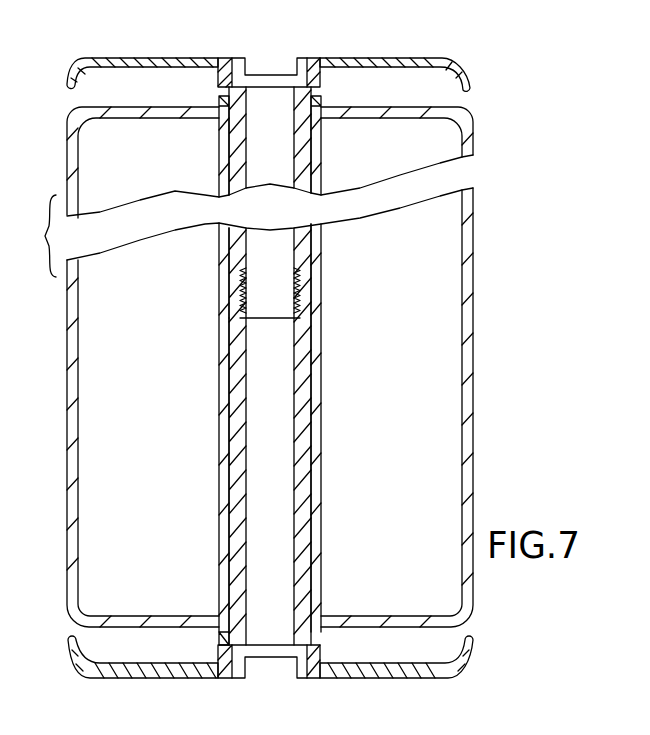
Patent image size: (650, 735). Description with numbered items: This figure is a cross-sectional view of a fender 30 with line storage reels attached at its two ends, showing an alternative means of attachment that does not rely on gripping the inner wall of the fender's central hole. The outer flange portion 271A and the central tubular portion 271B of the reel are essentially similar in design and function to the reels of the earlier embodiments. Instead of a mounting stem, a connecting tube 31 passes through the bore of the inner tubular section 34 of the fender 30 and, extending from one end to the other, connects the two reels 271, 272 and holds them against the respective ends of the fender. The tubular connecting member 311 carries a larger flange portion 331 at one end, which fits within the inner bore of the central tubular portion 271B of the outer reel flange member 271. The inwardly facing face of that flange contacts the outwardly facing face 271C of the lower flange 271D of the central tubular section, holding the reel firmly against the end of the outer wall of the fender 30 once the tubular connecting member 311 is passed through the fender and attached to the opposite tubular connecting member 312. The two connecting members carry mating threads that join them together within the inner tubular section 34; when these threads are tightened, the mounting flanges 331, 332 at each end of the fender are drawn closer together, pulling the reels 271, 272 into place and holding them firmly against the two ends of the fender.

The fender 30 is at (470, 215).
The outer flange portion 271A is at (86, 60).
The outer reel flange member 271 is at (421, 58).
The central tubular portion 271B is at (223, 60).
The outwardly facing face 271C is at (219, 102).
The lower flange 271D is at (323, 108).
The flange portion 331 is at (311, 98).
The mounting flange 332 is at (224, 645).
The connecting tube 31 is at (313, 349).
The tubular connecting member 311 is at (220, 243).
The opposite tubular connecting member 312 is at (221, 360).
The inner tubular section 34 is at (322, 263).
The reel 272 is at (447, 677).